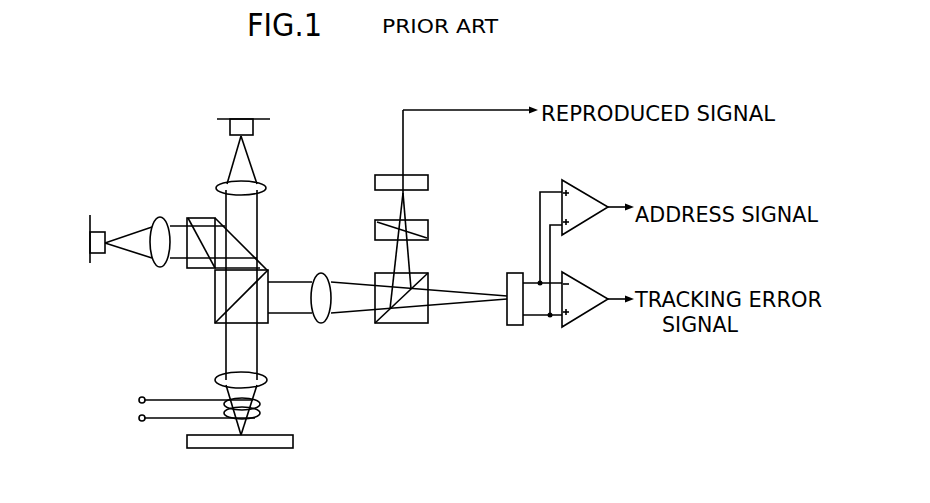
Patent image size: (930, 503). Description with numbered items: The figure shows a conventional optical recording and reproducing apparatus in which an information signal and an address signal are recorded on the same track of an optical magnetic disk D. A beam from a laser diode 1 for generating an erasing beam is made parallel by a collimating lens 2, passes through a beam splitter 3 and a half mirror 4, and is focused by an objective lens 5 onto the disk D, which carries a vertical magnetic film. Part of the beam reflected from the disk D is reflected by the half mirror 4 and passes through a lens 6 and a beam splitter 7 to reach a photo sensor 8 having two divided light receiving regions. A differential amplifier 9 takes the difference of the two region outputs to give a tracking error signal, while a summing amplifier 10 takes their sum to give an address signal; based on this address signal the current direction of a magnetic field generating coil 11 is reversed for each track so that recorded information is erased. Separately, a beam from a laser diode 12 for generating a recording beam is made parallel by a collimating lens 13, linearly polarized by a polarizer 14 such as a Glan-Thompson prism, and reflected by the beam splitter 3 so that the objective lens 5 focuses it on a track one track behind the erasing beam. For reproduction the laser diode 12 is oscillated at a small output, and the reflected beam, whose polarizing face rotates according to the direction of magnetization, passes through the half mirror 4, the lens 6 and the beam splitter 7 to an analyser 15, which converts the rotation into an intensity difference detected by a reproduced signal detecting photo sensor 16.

The laser diode 1 is at (242, 124).
The collimating lens 2 is at (263, 189).
The beam splitter 3 is at (245, 248).
The half mirror 4 is at (212, 320).
The objective lens 5 is at (267, 381).
The lens 6 is at (323, 320).
The beam splitter 7 is at (404, 323).
The photo sensor 8 is at (517, 325).
The differential amplifier 9 is at (590, 283).
The summing amplifier 10 is at (585, 190).
The magnetic field generating coil 11 is at (268, 408).
The laser diode 12 is at (96, 263).
The collimating lens 13 is at (156, 220).
The polarizer 14 is at (192, 270).
The analyser 15 is at (427, 228).
The reproduced signal detecting photo sensor 16 is at (423, 182).
The optical magnetic disk D is at (283, 448).